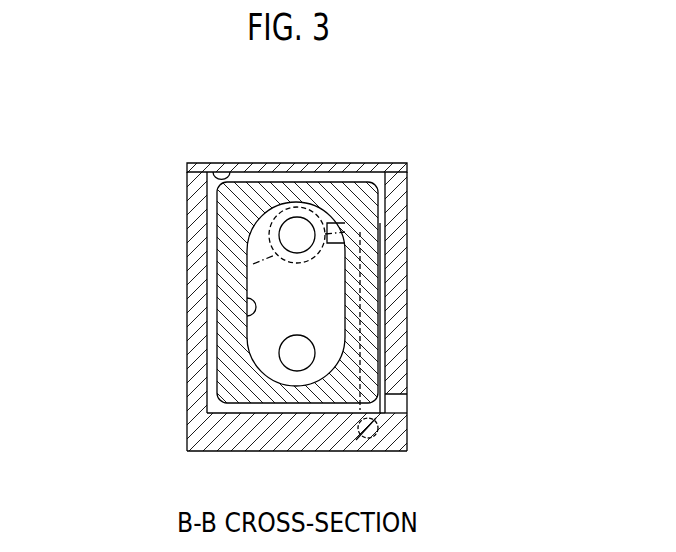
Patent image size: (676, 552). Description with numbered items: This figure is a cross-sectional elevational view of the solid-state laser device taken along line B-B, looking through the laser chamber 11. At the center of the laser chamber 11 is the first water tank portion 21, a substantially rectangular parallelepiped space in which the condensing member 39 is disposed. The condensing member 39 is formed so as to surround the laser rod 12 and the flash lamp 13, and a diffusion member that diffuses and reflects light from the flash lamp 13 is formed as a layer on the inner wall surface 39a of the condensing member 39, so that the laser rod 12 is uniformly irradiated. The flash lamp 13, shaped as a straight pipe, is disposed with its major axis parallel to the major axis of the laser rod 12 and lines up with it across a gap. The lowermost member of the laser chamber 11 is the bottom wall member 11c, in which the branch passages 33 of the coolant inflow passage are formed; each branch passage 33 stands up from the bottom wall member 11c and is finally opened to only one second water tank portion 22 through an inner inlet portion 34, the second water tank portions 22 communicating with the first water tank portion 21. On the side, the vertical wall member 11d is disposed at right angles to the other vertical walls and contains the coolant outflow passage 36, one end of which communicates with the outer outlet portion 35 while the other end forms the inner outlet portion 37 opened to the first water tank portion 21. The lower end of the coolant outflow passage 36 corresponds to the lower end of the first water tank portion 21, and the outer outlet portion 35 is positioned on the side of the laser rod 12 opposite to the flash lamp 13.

The laser chamber 11 is at (313, 164).
The bottom wall member 11c is at (220, 430).
The vertical wall member 11d is at (400, 336).
The first water tank portion 21 is at (221, 178).
The condensing member 39 is at (235, 212).
The inner wall surface 39a is at (255, 307).
The flash lamp 13 is at (290, 236).
The laser rod 12 is at (292, 353).
The second water tank portion 22 is at (253, 264).
The inner inlet portion 34 is at (367, 232).
The branch passage 33 is at (362, 286).
The outer outlet portion 35 is at (400, 400).
The coolant outflow passage 36 is at (400, 411).
The inner outlet portion 37 is at (344, 428).